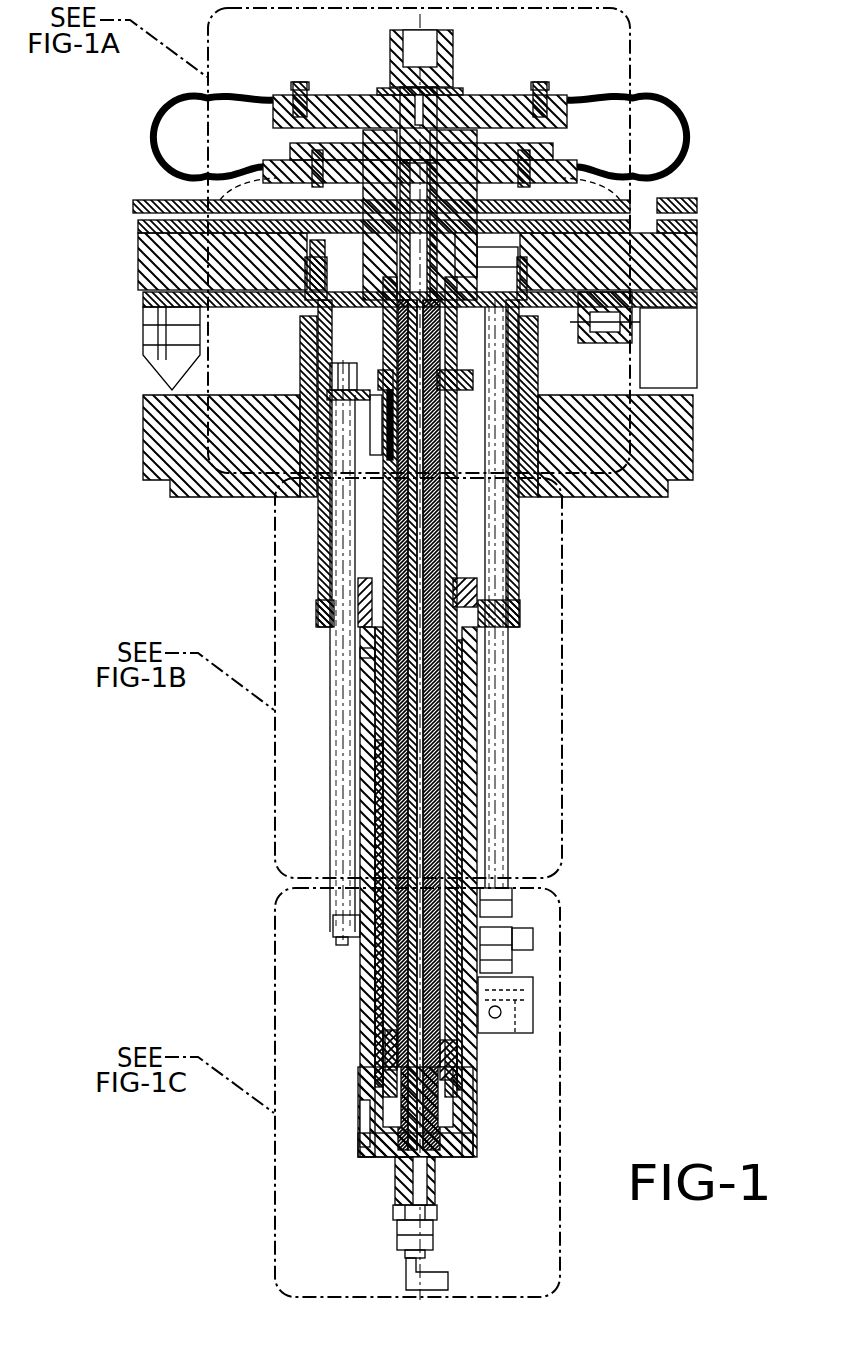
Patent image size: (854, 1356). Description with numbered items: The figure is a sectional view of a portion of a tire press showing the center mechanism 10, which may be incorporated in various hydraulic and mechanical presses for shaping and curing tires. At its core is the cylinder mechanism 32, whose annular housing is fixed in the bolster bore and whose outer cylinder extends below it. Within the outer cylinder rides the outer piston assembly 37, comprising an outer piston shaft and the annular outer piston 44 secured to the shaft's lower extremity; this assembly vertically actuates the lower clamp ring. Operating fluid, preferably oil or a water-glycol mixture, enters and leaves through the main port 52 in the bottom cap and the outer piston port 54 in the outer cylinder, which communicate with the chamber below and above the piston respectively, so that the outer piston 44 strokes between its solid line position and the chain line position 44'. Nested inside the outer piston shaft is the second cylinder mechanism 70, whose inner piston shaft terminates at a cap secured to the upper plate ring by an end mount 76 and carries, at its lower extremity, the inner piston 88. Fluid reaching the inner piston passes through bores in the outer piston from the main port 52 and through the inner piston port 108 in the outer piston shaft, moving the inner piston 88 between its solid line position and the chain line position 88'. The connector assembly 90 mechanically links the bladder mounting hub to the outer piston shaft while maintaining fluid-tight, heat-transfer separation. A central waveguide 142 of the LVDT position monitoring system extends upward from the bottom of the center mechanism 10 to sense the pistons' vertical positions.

The center mechanism 10 is at (316, 735).
The cylinder mechanism 32 is at (522, 676).
The outer piston assembly 37 is at (458, 826).
The outer piston 44 is at (488, 865).
The chain line position of outer piston 44' is at (292, 910).
The main port 52 is at (447, 1140).
The outer piston port 54 is at (367, 653).
The second cylinder mechanism 70 is at (466, 546).
The end mount 76 is at (443, 45).
The inner piston 88 is at (349, 1040).
The chain line position of inner piston 88' is at (307, 687).
The connector assembly 90 is at (472, 418).
The inner piston port 108 is at (390, 453).
The central waveguide 142 is at (402, 1183).